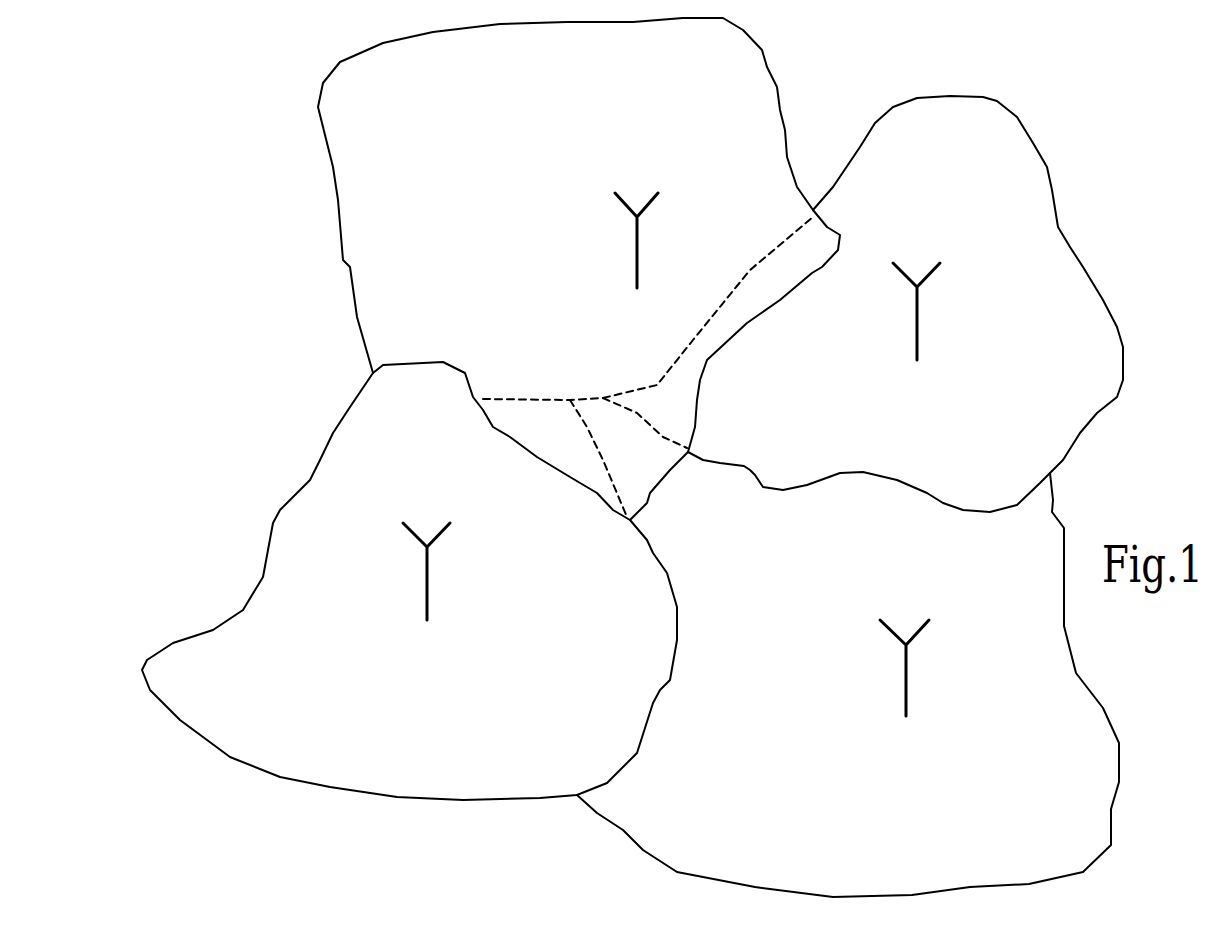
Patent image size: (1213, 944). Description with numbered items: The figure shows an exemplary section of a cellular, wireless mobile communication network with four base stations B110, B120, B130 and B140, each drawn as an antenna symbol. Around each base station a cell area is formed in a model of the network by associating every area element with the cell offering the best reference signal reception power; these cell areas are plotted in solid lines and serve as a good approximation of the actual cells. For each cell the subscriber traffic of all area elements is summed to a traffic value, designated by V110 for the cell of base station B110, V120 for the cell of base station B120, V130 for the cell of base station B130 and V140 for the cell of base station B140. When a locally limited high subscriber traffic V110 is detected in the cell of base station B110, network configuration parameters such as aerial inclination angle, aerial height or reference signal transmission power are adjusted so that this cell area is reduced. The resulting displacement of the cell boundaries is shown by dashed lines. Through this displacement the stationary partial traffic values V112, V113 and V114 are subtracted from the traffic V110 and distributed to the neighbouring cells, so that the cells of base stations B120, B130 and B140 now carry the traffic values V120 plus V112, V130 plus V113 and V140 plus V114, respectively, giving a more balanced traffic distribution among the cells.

The traffic value V110 is at (579, 235).
The traffic value V120 is at (905, 304).
The traffic value V130 is at (409, 581).
The traffic value V140 is at (848, 674).
The stationary partial traffic value V112 is at (708, 317).
The stationary partial traffic value V113 is at (555, 457).
The stationary partial traffic value V114 is at (645, 431).
The base station B110 is at (615, 240).
The base station B120 is at (946, 311).
The base station B130 is at (406, 571).
The base station B140 is at (935, 668).